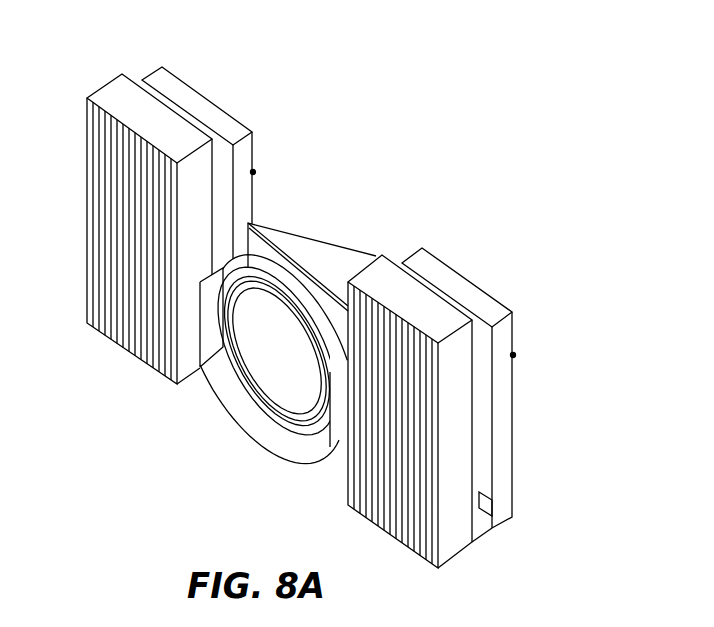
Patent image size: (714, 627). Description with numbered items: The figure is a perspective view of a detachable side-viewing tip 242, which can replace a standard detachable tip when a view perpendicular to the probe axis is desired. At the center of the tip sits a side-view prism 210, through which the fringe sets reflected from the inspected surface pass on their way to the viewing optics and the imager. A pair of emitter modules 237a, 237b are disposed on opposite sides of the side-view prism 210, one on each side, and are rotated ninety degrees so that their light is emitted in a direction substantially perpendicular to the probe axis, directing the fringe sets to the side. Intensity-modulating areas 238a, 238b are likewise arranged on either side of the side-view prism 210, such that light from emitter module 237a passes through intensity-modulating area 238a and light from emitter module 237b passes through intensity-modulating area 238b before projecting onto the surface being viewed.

The detachable side-viewing tip 242 is at (532, 102).
The intensity-modulating area 238a is at (111, 80).
The emitter module 237a is at (202, 95).
The side-view prism 210 is at (318, 241).
The intensity-modulating area 238b is at (455, 551).
The emitter module 237b is at (497, 299).